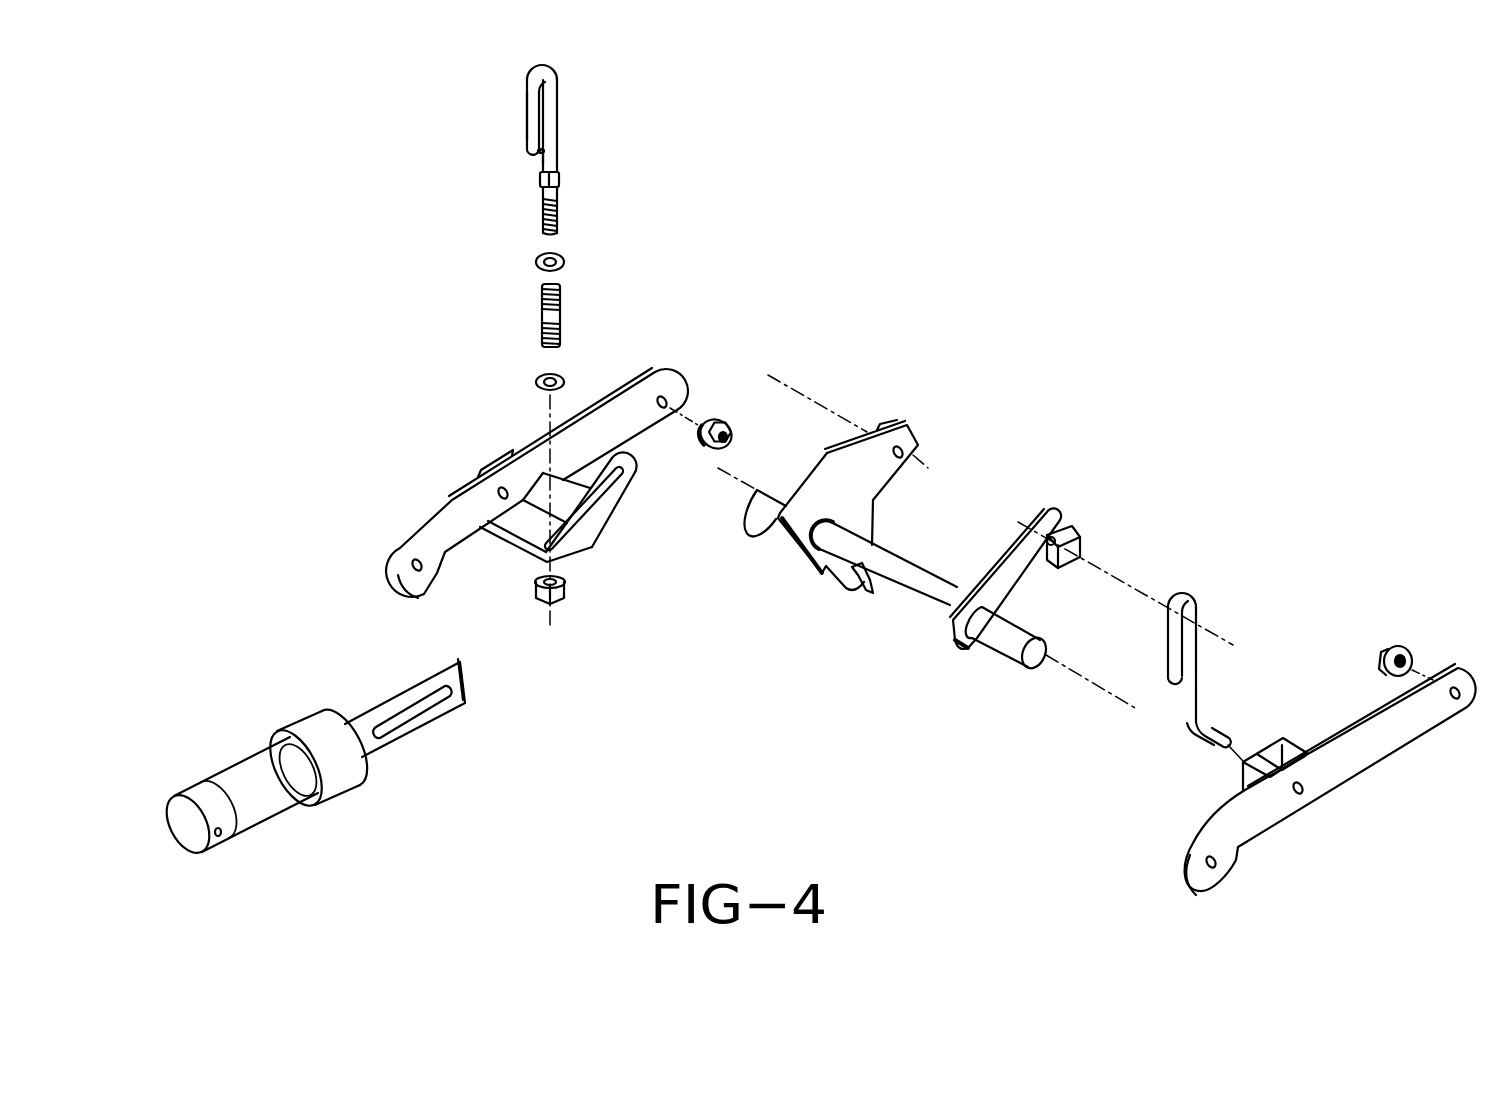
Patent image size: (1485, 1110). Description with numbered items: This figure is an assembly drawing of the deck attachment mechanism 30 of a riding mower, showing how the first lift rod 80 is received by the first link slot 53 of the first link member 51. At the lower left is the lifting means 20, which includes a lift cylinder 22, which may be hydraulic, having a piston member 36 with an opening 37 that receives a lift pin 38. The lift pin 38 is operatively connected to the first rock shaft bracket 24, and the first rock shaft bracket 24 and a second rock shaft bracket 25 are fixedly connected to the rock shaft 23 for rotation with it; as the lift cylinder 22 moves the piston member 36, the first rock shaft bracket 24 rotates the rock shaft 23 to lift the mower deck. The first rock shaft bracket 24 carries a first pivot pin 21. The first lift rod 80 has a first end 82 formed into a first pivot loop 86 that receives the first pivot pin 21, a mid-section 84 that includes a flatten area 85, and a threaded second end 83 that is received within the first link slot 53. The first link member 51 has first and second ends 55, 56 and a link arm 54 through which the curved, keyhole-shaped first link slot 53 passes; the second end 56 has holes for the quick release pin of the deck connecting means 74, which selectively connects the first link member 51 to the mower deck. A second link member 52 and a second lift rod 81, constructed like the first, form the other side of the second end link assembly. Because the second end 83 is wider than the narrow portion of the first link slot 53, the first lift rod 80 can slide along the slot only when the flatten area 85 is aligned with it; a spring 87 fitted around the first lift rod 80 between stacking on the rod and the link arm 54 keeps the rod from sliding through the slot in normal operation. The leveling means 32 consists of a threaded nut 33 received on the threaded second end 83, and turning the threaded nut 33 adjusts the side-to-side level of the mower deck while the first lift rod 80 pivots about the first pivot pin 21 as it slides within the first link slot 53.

The lifting means 20 is at (363, 806).
The lift cylinder 22 is at (272, 795).
The piston member 36 is at (465, 702).
The opening 37 is at (408, 712).
The deck attachment mechanism 30 is at (1172, 223).
The leveling means 32 is at (467, 198).
The first lift rod 80 is at (557, 116).
The first end 82 is at (550, 68).
The first pivot loop 86 is at (557, 82).
The mid-section 84 is at (558, 156).
The flatten area 85 is at (558, 178).
The second end 83 is at (558, 214).
The spring 87 is at (543, 293).
The first link member 51 is at (613, 397).
The first end 55 is at (680, 377).
The second end 56 is at (385, 557).
The first link slot 53 is at (590, 519).
The link arm 54 is at (527, 537).
The threaded nut 33 is at (567, 593).
The deck connecting means 74 is at (713, 375).
The first pivot pin 21 is at (882, 422).
The first rock shaft bracket 24 is at (870, 497).
The lift pin 38 is at (873, 573).
The rock shaft 23 is at (930, 582).
The second rock shaft bracket 25 is at (1013, 597).
The second lift rod 81 is at (1193, 670).
The second link member 52 is at (1340, 772).